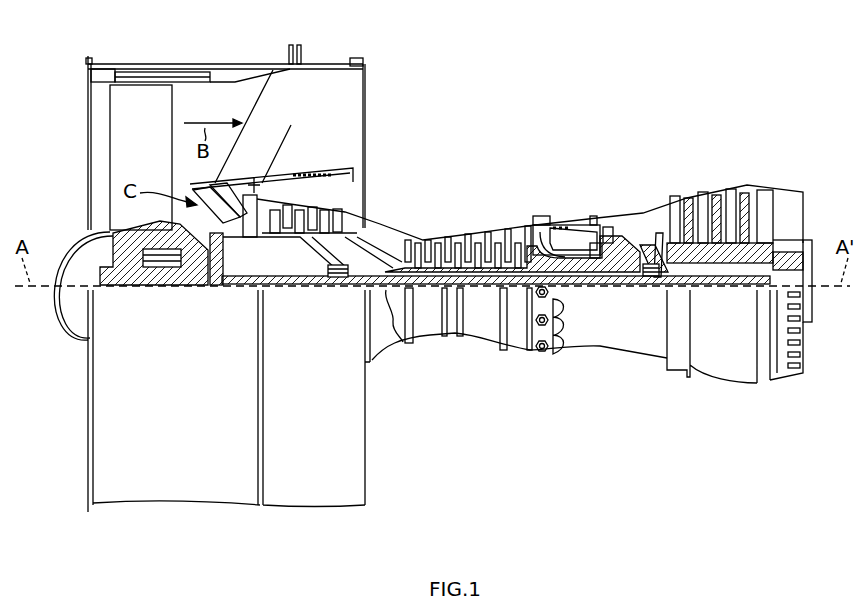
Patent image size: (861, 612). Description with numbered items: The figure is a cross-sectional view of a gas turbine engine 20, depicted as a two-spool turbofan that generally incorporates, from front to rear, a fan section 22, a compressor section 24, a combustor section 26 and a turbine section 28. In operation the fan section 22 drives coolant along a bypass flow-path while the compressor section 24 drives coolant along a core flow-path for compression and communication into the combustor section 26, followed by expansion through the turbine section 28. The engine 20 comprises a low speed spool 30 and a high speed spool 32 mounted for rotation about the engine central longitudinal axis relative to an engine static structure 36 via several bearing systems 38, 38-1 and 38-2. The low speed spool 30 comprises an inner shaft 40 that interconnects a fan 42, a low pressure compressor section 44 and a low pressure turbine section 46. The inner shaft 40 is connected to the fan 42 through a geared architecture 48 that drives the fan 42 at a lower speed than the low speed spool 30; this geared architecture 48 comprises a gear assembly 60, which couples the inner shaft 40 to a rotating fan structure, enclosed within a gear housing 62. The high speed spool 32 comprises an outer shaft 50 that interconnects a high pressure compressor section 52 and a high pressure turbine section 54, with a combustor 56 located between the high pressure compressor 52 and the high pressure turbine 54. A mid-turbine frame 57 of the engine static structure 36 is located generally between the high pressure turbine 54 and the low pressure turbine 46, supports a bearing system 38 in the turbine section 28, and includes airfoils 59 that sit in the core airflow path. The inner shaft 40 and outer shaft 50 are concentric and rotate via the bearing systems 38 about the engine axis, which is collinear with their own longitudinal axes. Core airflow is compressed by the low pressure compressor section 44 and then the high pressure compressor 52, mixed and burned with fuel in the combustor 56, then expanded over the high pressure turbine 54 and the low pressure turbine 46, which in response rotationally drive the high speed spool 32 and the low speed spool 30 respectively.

The gas turbine engine 20 is at (606, 85).
The fan section 22 is at (258, 56).
The compressor section 24 is at (258, 144).
The combustor section 26 is at (530, 143).
The turbine section 28 is at (762, 144).
The low speed spool 30 is at (487, 298).
The high speed spool 32 is at (512, 262).
The engine static structure 36 is at (213, 500).
The bearing system 38 is at (652, 278).
The bearing system 38-1 is at (150, 285).
The bearing system 38-2 is at (340, 287).
The inner shaft 40 is at (393, 330).
The fan 42 is at (127, 157).
The low pressure compressor section 44 is at (316, 210).
The low pressure turbine section 46 is at (712, 205).
The geared architecture 48 is at (234, 298).
The outer shaft 50 is at (562, 277).
The high pressure compressor section 52 is at (472, 252).
The high pressure turbine section 54 is at (620, 226).
The combustor 56 is at (566, 240).
The mid-turbine frame 57 is at (648, 248).
The airfoils 59 is at (660, 228).
The gear assembly 60 is at (245, 270).
The gear housing 62 is at (235, 254).